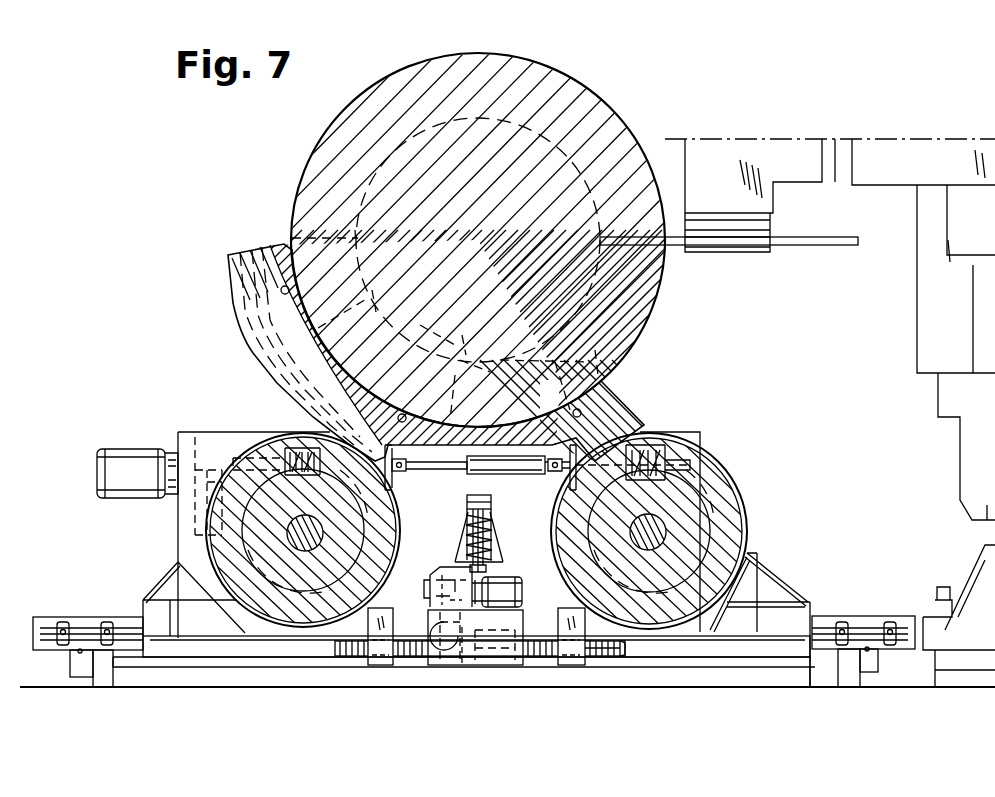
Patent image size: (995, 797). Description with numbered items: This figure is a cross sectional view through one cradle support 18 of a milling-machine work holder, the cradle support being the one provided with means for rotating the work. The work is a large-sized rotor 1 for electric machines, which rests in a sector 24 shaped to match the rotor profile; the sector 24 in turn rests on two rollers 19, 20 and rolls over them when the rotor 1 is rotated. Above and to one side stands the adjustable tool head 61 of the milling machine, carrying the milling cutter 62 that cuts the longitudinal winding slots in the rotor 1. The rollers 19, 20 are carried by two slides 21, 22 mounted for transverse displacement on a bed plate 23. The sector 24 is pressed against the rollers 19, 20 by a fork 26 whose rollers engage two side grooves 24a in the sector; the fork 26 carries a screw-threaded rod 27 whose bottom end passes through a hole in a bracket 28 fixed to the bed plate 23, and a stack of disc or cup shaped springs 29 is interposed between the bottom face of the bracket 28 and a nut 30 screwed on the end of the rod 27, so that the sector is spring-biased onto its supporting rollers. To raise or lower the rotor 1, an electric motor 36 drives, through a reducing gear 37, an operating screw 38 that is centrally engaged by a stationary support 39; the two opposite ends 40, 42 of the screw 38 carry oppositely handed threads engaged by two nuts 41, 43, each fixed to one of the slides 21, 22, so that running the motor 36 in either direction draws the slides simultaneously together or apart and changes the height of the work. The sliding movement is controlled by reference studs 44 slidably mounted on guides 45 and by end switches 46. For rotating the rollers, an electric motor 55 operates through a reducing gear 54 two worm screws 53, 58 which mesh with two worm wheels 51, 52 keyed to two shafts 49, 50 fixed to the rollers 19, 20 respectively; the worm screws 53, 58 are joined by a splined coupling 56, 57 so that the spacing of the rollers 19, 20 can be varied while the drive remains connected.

The rotor 1 is at (360, 118).
The cradle support 18 is at (737, 440).
The roller 19 is at (252, 440).
The roller 20 is at (720, 498).
The slide 21 is at (165, 600).
The slide 22 is at (772, 586).
The bed plate 23 is at (232, 678).
The sector 24 is at (243, 297).
The side grooves 24a is at (252, 262).
The fork 26 is at (484, 510).
The screw-threaded rod 27 is at (495, 520).
The bracket 28 is at (466, 522).
The disc or cup shaped springs 29 is at (497, 541).
The nut 30 is at (488, 566).
The electric motor 36 is at (523, 594).
The reducing gear 37 is at (430, 582).
The operating screw 38 is at (495, 667).
The stationary support 39 is at (467, 676).
The end of the screw 40 is at (407, 660).
The nut 41 is at (376, 666).
The end of the screw 42 is at (606, 659).
The nut 43 is at (568, 666).
The reference studs 44 is at (105, 622).
The guides 45 is at (42, 625).
The end switches 46 is at (76, 653).
The shaft 49 is at (305, 540).
The shaft 50 is at (656, 540).
The worm wheel 51 is at (320, 590).
The worm wheel 52 is at (680, 590).
The worm screw 53 is at (300, 435).
The reducing gear 54 is at (220, 448).
The electric motor 55 is at (142, 455).
The splined coupling 56 is at (438, 475).
The splined coupling 57 is at (528, 472).
The worm screw 58 is at (665, 440).
The adjustable tool head 61 is at (698, 148).
The milling cutter 62 is at (808, 246).